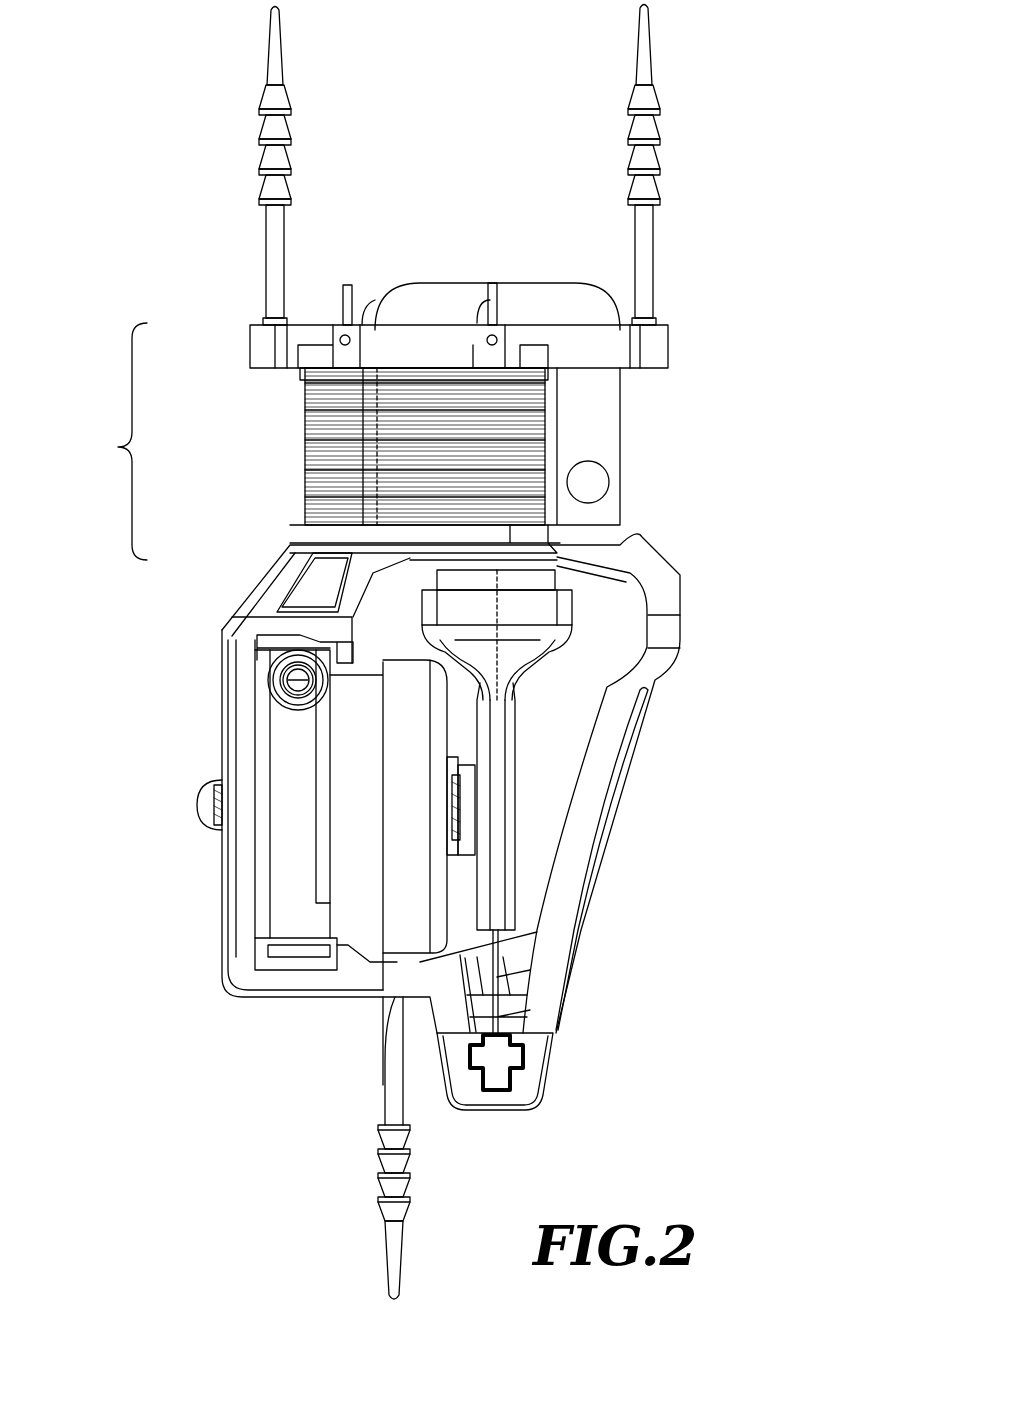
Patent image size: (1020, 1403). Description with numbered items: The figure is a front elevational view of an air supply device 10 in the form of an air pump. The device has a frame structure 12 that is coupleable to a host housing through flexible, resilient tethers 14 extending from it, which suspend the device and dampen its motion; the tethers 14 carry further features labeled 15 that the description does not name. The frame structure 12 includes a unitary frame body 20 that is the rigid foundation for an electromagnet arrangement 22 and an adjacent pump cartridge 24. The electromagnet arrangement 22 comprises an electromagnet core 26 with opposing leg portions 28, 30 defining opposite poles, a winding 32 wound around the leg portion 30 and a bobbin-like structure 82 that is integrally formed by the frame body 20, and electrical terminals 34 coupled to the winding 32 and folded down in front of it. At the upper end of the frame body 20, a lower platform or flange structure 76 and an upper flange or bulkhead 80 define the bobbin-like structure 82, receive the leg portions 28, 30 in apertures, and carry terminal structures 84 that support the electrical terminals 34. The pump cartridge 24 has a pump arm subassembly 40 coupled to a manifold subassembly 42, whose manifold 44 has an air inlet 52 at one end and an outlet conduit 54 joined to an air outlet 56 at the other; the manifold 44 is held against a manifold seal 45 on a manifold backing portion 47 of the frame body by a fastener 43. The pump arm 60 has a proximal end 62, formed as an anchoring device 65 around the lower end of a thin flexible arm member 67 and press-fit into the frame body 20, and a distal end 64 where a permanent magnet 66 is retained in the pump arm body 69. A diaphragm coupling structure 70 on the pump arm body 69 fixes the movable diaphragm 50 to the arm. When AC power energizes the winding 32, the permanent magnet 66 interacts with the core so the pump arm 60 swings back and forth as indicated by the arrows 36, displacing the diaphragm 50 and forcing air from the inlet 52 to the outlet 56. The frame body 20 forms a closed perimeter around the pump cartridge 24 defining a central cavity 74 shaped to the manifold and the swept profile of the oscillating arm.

The air supply device 10 is at (110, 238).
The frame structure 12 is at (700, 532).
The tethers 14 is at (280, 48).
The pin insulator 15 is at (285, 96).
The unitary frame body 20 is at (668, 636).
The electromagnet arrangement 22 is at (230, 416).
The pump cartridge 24 is at (347, 978).
The electromagnet core 26 is at (430, 282).
The leg portion 28 is at (612, 428).
The leg portion 30 is at (375, 470).
The winding 32 is at (308, 440).
The electrical terminals 34 is at (347, 290).
The arrows 36 is at (398, 600).
The pump arm subassembly 40 is at (545, 752).
The manifold subassembly 42 is at (298, 978).
The fastener 43 is at (205, 805).
The manifold 44 is at (285, 875).
The manifold seal 45 is at (260, 835).
The manifold backing portion 47 is at (245, 770).
The movable diaphragm 50 is at (398, 918).
The air inlet 52 is at (290, 958).
The outlet conduit 54 is at (262, 665).
The air outlet 56 is at (290, 690).
The pump arm 60 is at (520, 893).
The proximal end 62 is at (500, 1015).
The distal end 64 is at (530, 607).
The anchoring device 65 is at (500, 1068).
The permanent magnet 66 is at (540, 578).
The thin flexible arm member 67 is at (500, 975).
The pump arm body 69 is at (512, 770).
The diaphragm coupling structure 70 is at (470, 812).
The central cavity 74 is at (608, 712).
The lower platform or flange structure 76 is at (318, 536).
The upper flange or bulkhead 80 is at (262, 352).
The bobbin-like structure 82 is at (114, 441).
The terminal structures 84 is at (340, 333).